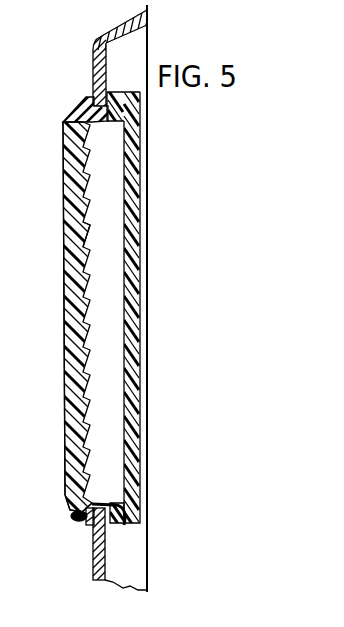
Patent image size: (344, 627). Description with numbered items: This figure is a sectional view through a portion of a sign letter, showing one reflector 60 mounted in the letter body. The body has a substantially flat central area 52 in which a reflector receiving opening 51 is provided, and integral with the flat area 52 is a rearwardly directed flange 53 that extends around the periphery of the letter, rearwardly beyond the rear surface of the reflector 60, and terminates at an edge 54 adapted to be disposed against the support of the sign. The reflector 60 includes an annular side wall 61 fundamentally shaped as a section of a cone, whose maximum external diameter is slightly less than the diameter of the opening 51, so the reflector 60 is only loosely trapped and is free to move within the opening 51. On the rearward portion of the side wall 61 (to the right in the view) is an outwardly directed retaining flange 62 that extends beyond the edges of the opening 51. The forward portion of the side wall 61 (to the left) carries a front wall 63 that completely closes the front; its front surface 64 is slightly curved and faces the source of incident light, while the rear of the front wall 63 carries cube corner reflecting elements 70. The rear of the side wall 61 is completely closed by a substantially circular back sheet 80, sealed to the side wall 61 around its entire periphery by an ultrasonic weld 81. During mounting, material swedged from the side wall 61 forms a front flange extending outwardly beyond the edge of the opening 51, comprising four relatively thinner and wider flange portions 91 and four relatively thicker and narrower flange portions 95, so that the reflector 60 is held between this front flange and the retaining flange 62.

The reflector receiving opening 51 is at (90, 525).
The flat area 52 is at (93, 78).
The rearwardly directed flange 53 is at (112, 30).
The edge 54 is at (150, 16).
The reflector 60 is at (62, 322).
The side wall 61 is at (82, 505).
The retaining flange 62 is at (122, 530).
The front wall 63 is at (62, 307).
The front surface 64 is at (62, 222).
The reflecting elements 70 is at (90, 230).
The back sheet 80 is at (132, 332).
The weld 81 is at (122, 105).
The relatively thinner and relatively wider flange portions 91 is at (86, 106).
The relatively thicker and relatively narrower flange portions 95 is at (80, 517).